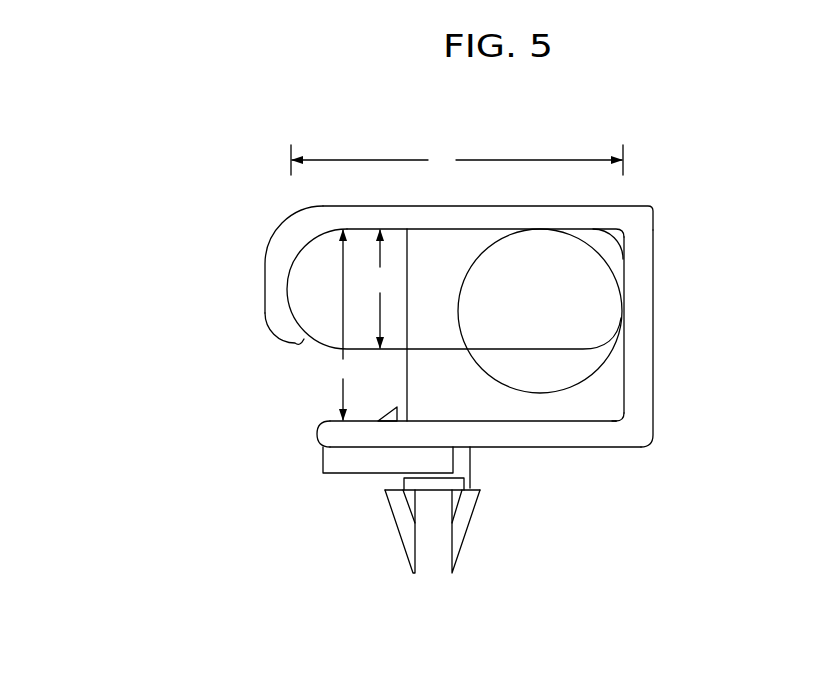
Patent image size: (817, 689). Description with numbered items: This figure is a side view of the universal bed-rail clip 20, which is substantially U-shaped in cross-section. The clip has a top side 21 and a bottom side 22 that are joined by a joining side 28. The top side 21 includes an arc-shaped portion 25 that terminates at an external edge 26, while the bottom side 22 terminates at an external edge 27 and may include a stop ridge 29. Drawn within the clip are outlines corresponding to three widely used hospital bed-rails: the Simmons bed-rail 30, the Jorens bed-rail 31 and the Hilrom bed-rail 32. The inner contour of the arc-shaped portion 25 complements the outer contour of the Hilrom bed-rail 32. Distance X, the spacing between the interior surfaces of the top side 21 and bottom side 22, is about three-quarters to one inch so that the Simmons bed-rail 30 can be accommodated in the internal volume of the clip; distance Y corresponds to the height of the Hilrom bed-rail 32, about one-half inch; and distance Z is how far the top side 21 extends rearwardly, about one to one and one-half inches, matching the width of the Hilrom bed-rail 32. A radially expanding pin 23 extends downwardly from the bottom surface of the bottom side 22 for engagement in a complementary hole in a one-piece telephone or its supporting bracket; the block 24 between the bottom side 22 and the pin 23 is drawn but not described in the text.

The universal bed-rail clip 20 is at (728, 239).
The top side 21 is at (634, 217).
The bottom side 22 is at (577, 438).
The radially expanding pin 23 is at (458, 550).
The mounting block 24 is at (338, 462).
The arc-shaped portion 25 is at (278, 265).
The external edge 26 is at (300, 346).
The external edge 27 is at (317, 434).
The joining side 28 is at (644, 284).
The stop ridge 29 is at (390, 421).
The Simmons bed-rail 30 is at (602, 409).
The Jorens bed-rail 31 is at (587, 362).
The Hilrom bed-rail 32 is at (612, 318).